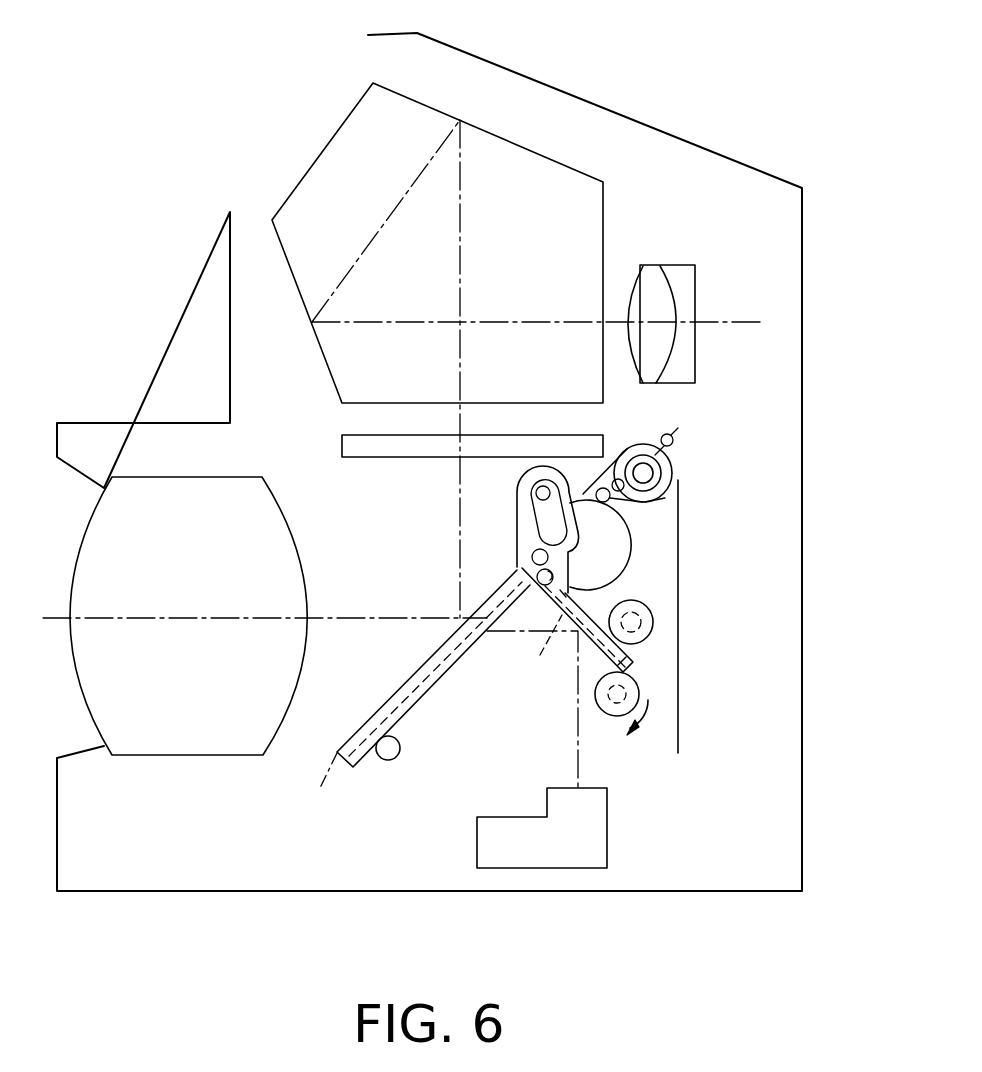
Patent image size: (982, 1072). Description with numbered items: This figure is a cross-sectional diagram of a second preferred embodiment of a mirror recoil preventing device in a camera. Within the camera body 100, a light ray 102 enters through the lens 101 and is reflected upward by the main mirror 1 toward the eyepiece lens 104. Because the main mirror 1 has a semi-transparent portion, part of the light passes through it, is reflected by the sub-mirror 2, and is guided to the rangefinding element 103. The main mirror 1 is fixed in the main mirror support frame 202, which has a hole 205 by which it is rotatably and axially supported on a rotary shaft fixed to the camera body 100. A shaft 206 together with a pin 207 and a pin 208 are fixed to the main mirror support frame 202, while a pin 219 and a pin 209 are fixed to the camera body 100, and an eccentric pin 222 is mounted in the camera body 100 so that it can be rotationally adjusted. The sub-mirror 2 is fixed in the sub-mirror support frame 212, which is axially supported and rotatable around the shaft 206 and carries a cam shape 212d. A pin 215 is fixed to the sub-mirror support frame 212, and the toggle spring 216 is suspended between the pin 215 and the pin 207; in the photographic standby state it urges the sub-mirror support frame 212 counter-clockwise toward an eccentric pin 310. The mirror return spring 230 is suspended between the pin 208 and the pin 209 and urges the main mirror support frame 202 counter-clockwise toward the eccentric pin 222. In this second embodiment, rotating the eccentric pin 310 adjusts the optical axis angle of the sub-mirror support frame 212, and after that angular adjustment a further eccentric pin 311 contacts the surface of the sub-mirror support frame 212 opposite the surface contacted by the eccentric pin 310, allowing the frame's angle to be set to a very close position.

The camera body 100 is at (674, 892).
The lens 101 is at (150, 492).
The light ray 102 is at (315, 615).
The rangefinding element 103 is at (512, 870).
The eyepiece lens 104 is at (684, 266).
The main mirror 1 is at (420, 694).
The sub-mirror 2 is at (542, 649).
The main mirror support frame 202 is at (665, 472).
The hole 205 is at (665, 490).
The shaft 206 is at (547, 554).
The pin 207 is at (632, 522).
The pin 208 is at (668, 498).
The pin 209 is at (670, 457).
The sub-mirror support frame 212 is at (634, 663).
The cam shape 212d is at (543, 513).
The pin 215 is at (566, 591).
The toggle spring 216 is at (552, 574).
The pin 219 is at (537, 493).
The eccentric pin 222 is at (388, 760).
The mirror return spring 230 is at (670, 436).
The eccentric pin 310 is at (649, 635).
The eccentric pin 311 is at (608, 720).